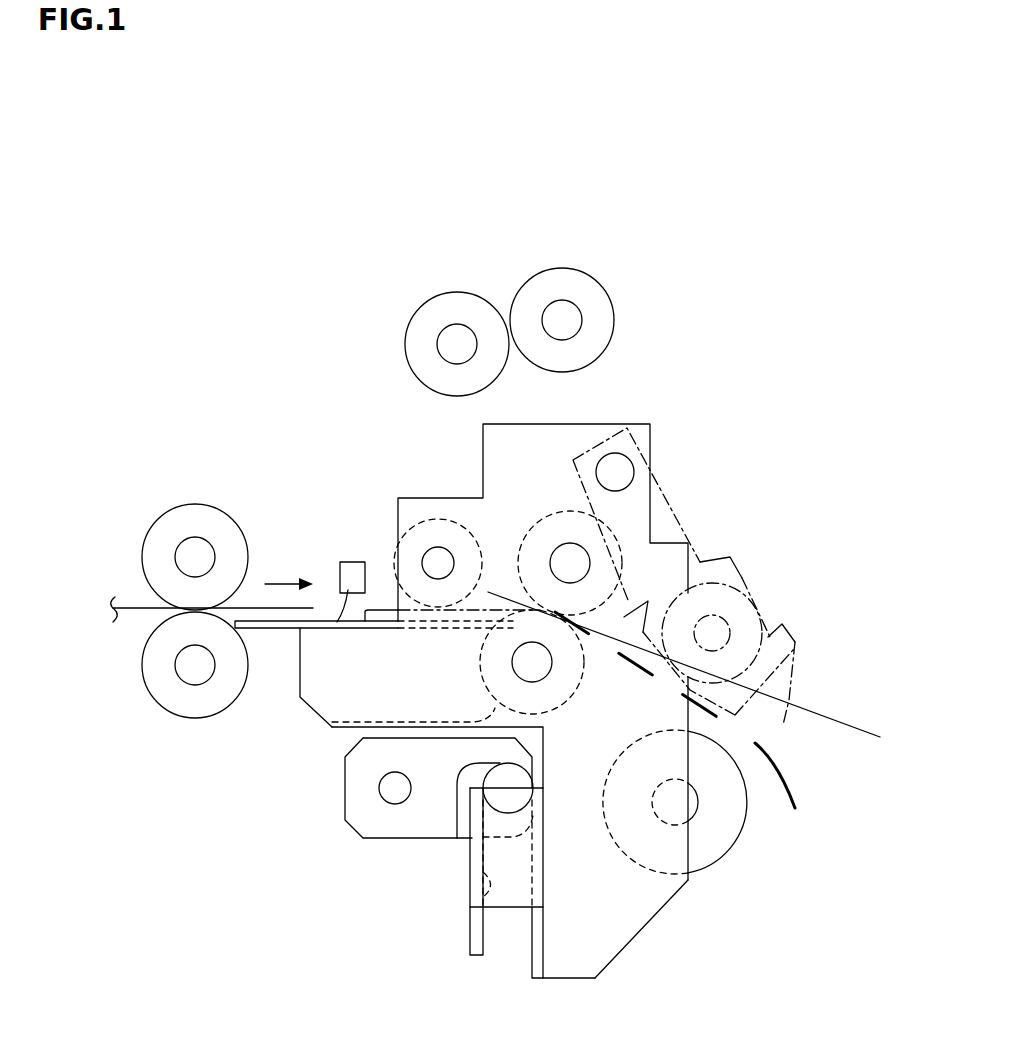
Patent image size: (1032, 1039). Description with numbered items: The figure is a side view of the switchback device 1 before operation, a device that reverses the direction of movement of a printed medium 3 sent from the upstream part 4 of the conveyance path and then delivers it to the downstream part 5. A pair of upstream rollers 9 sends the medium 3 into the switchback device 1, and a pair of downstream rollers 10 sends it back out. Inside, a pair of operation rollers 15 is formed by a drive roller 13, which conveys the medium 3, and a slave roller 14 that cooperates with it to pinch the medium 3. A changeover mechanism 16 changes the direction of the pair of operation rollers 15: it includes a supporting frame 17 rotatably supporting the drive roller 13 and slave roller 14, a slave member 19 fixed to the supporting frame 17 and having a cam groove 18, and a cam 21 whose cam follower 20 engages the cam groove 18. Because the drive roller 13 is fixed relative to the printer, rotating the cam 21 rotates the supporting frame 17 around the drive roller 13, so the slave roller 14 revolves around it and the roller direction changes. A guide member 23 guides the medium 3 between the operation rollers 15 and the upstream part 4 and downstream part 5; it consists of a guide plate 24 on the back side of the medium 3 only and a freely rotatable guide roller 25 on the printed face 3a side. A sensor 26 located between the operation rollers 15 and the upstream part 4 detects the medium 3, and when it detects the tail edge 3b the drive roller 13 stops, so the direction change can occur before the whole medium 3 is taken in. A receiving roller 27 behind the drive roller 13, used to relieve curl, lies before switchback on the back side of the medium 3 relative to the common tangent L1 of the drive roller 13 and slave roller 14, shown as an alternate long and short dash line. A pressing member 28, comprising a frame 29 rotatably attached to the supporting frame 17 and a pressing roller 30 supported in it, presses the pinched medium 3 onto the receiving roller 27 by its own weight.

The switchback device 1 is at (705, 377).
The medium 3 is at (467, 656).
The printed face 3a is at (130, 598).
The tail edge 3b is at (363, 632).
The upstream part 4 is at (176, 609).
The downstream part 5 is at (509, 271).
The pair of upstream rollers 9 is at (195, 522).
The pair of downstream rollers 10 is at (530, 293).
The drive roller 13 is at (330, 723).
The slave roller 14 is at (553, 520).
The pair of operation rollers 15 is at (479, 562).
The changeover mechanism 16 is at (431, 874).
The supporting frame 17 is at (625, 917).
The cam groove 18 is at (482, 892).
The slave member 19 is at (512, 900).
The cam follower 20 is at (456, 836).
The cam 21 is at (363, 818).
The guide member 23 is at (428, 562).
The guide plate 24 is at (328, 622).
The guide roller 25 is at (394, 563).
The sensor 26 is at (325, 626).
The receiving roller 27 is at (722, 832).
The pressing member 28 is at (712, 540).
The frame 29 is at (748, 555).
The pressing roller 30 is at (782, 626).
The common tangent L1 is at (704, 673).